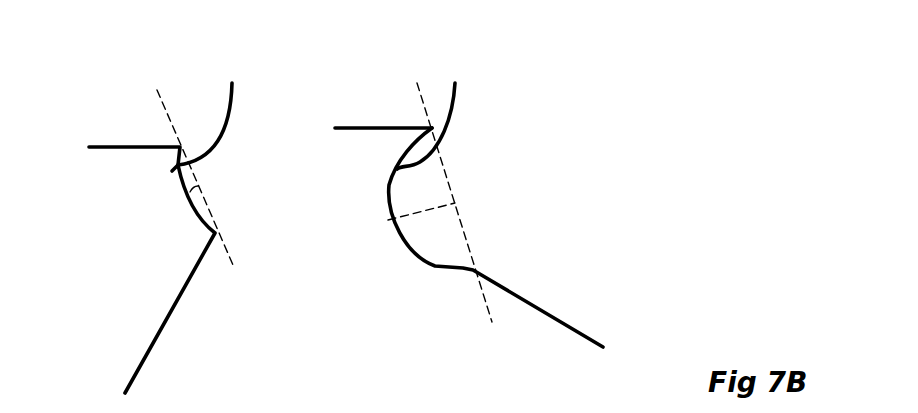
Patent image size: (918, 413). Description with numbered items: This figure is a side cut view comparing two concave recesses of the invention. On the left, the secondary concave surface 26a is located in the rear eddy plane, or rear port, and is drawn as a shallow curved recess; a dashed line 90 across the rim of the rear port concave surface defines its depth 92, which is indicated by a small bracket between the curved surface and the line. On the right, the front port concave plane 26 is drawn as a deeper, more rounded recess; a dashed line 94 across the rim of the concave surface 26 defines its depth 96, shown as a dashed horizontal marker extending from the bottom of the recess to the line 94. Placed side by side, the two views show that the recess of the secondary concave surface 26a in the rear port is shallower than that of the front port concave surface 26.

The secondary concave surface 26a is at (171, 115).
The front port concave plane 26 is at (402, 113).
The line across the rim of the rear port concave surface 90 is at (208, 209).
The depth 92 is at (198, 186).
The line across the rim of the concave surface 94 is at (467, 240).
The depth 96 is at (427, 210).